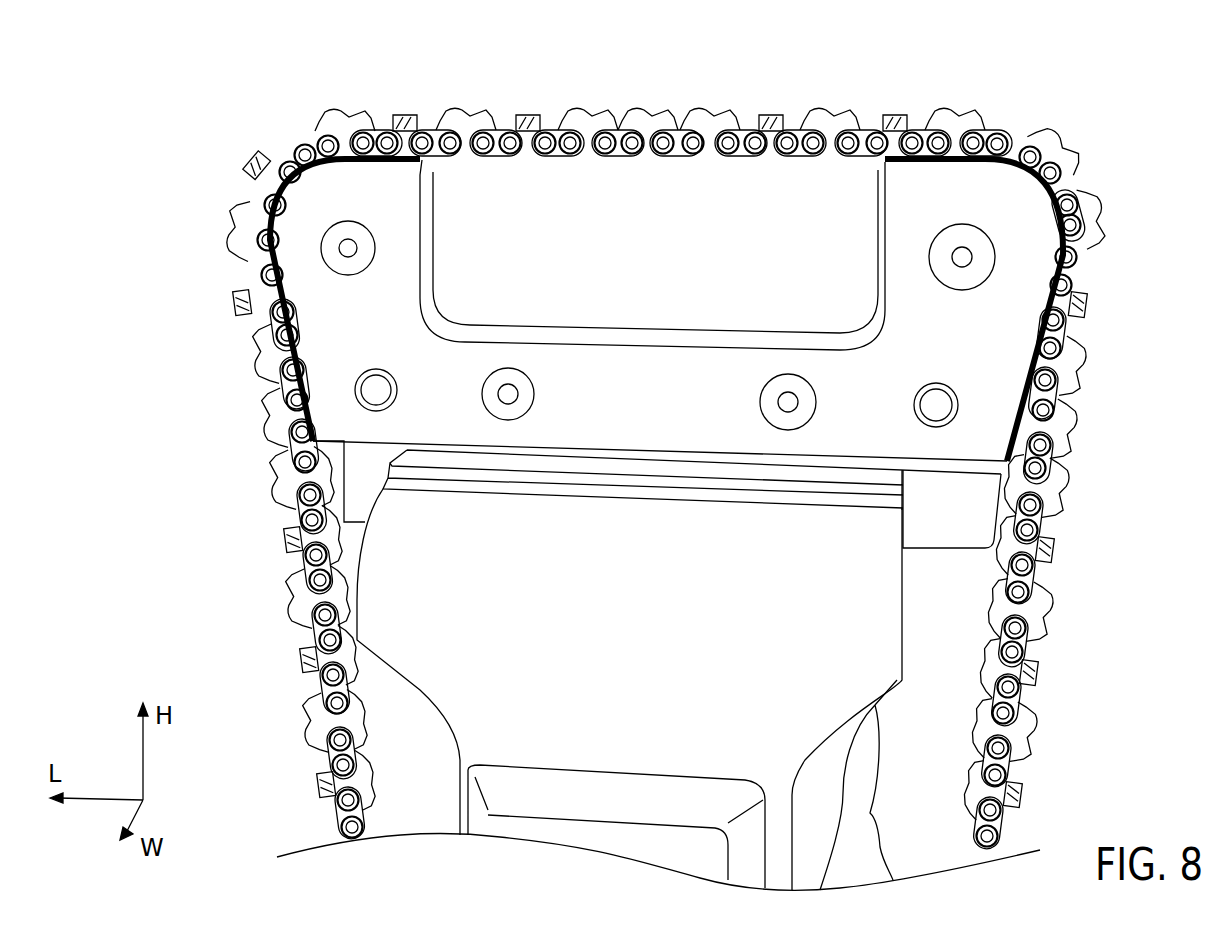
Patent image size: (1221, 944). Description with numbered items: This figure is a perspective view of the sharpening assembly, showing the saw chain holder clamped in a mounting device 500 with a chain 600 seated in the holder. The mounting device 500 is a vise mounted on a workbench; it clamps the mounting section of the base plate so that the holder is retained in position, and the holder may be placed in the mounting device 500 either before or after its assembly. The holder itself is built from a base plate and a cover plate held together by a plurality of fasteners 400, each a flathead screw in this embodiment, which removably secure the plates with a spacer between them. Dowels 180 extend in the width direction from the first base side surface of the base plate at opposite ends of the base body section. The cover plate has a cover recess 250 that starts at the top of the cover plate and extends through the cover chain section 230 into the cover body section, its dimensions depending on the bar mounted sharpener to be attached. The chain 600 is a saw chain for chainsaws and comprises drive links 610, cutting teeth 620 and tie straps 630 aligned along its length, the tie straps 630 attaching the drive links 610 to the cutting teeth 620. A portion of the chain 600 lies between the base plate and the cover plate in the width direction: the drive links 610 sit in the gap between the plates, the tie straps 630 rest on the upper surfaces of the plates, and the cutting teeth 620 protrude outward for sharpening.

The dowels 180 is at (380, 392).
The cover chain section 230 is at (1013, 222).
The cover recess 250 is at (669, 254).
The fasteners 400 is at (762, 400).
The mounting device 500 is at (669, 594).
The chain 600 is at (246, 281).
The drive links 610 is at (355, 760).
The cutting teeth 620 is at (510, 118).
The tie straps 630 is at (705, 135).